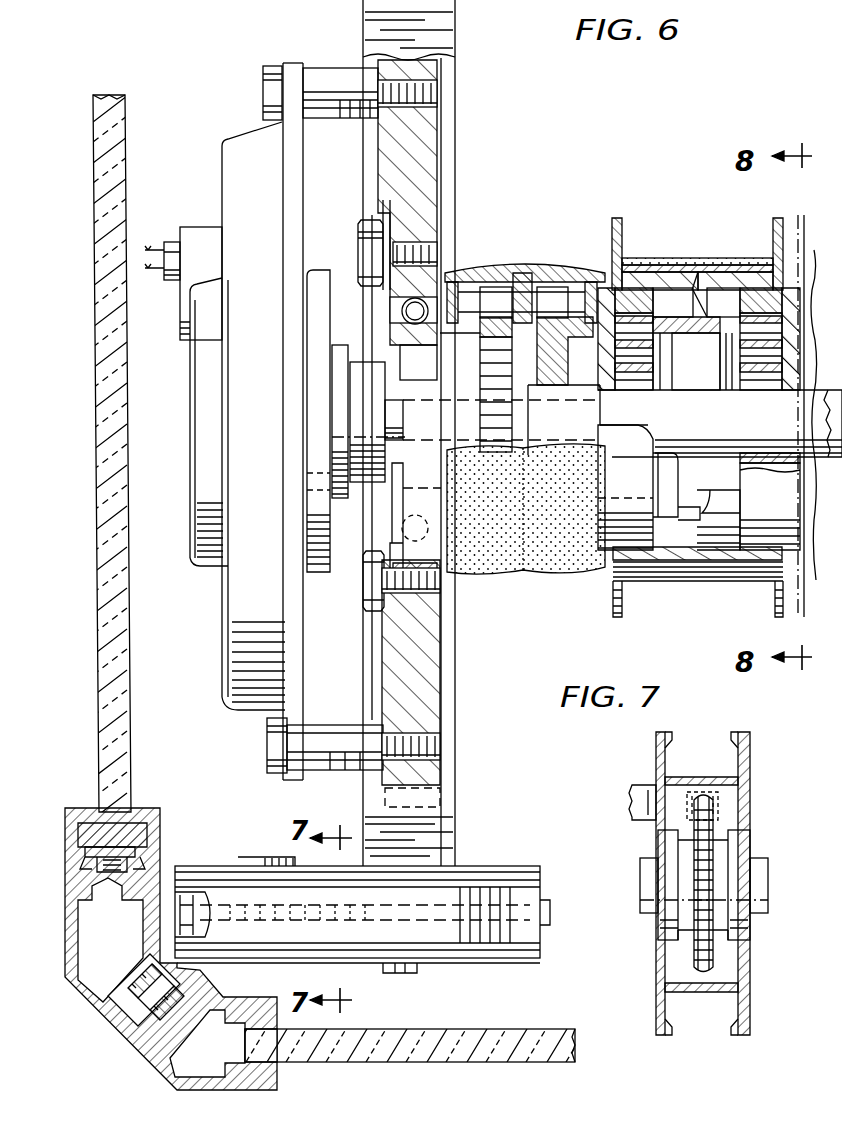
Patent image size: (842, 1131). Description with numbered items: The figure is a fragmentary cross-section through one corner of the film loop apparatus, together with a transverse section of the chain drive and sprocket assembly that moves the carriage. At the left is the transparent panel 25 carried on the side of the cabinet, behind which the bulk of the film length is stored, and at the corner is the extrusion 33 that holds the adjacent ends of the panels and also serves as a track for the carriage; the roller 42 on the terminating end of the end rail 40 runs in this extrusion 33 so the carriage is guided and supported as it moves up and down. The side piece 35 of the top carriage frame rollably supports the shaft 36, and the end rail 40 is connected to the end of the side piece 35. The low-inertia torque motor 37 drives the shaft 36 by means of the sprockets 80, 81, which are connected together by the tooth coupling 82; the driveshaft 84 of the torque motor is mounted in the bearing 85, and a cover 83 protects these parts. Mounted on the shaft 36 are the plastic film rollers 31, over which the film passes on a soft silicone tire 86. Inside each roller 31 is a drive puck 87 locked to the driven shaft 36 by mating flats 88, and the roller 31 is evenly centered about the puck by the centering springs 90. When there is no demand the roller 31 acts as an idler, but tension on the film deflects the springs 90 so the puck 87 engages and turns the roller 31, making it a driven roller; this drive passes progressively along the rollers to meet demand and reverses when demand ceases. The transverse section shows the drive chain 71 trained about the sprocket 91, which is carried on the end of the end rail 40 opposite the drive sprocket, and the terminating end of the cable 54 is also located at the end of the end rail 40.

In FIG. 6, the transparent panel 25 is at (130, 98).
In FIG. 6, the torque motor 37 is at (232, 141).
In FIG. 6, the extrusion 33 is at (65, 812).
In FIG. 6, the roller 42 is at (150, 1015).
In FIG. 6, the side piece 35 is at (456, 815).
In FIG. 6, the end rail 40 is at (498, 870).
In FIG. 7, the end rail 40 is at (752, 757).
In FIG. 6, the cable 54 is at (270, 916).
In FIG. 6, the chain 71 is at (551, 902).
In FIG. 7, the chain 71 is at (718, 807).
In FIG. 6, the sprocket 91 is at (208, 896).
In FIG. 7, the sprocket 91 is at (713, 950).
In FIG. 6, the driveshaft 84 is at (394, 414).
In FIG. 6, the bearing 85 is at (398, 329).
In FIG. 6, the sprocket 80 is at (497, 282).
In FIG. 6, the sprocket 81 is at (554, 287).
In FIG. 6, the tooth coupling 82 is at (522, 274).
In FIG. 6, the cover 83 is at (510, 570).
In FIG. 6, the film roller 31 is at (617, 218).
In FIG. 6, the soft silicone tire 86 is at (693, 272).
In FIG. 6, the drive puck 87 is at (639, 296).
In FIG. 6, the flats 88 is at (756, 388).
In FIG. 6, the shaft 36 is at (712, 428).
In FIG. 6, the centering spring 90 is at (640, 392).